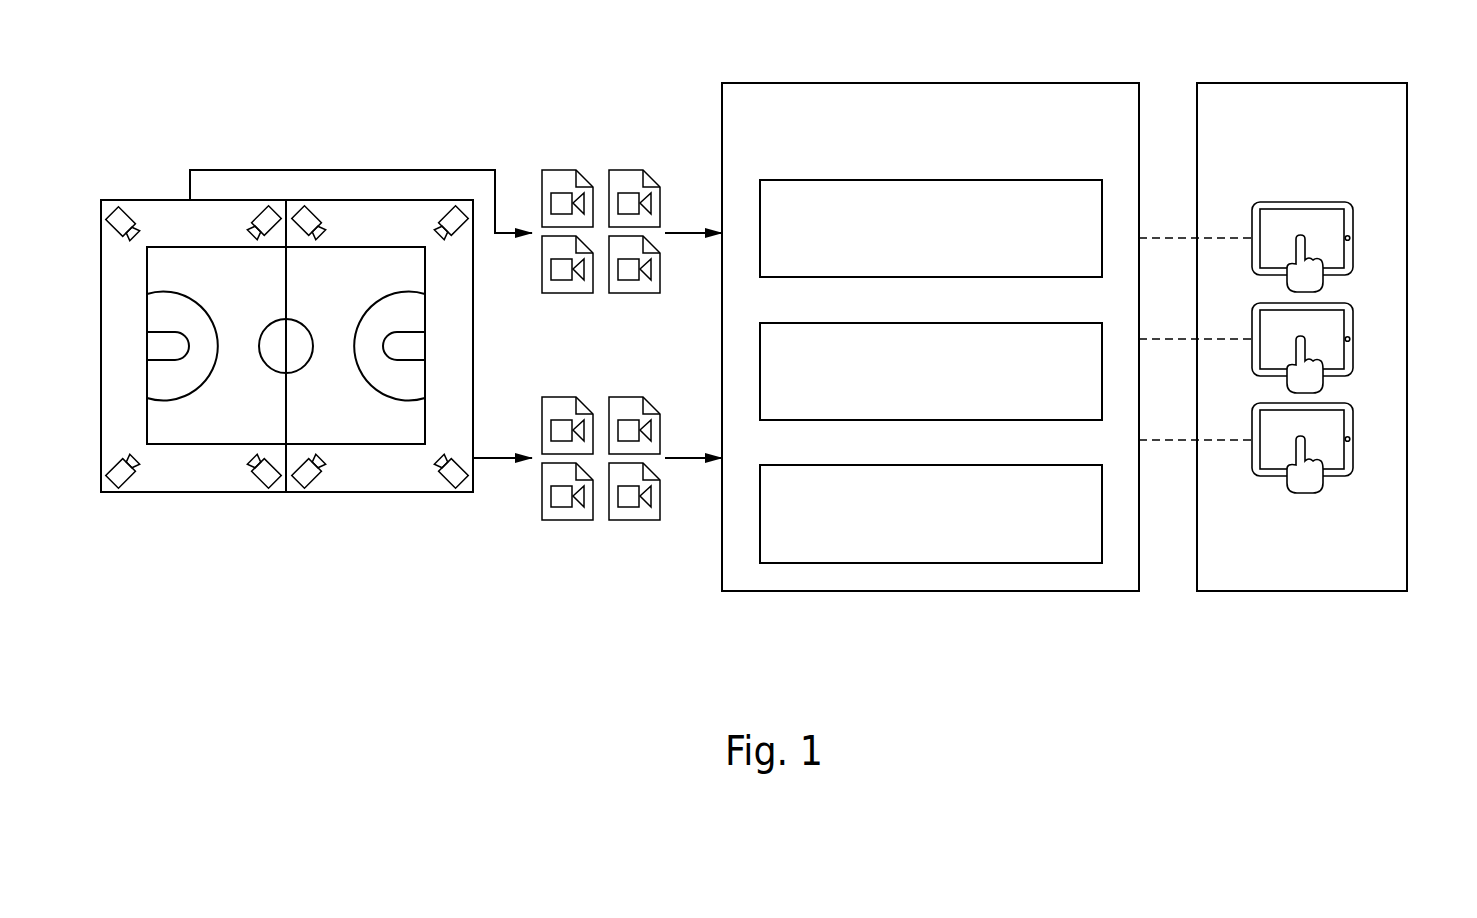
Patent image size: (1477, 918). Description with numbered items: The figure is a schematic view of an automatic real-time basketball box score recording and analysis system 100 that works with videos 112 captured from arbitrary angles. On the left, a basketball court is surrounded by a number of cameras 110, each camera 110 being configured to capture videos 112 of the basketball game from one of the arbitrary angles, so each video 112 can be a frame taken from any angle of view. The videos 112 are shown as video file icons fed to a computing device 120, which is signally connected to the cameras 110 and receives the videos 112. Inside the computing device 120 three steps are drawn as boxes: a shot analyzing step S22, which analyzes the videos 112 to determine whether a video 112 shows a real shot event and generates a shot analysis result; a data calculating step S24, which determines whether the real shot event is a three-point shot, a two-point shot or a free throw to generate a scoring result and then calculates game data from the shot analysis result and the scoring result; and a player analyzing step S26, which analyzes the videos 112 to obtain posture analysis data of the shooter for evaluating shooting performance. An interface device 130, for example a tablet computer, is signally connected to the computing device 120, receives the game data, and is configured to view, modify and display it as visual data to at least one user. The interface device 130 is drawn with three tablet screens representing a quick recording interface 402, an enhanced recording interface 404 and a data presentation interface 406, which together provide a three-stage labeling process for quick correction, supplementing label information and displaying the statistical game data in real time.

The automatic real-time basketball box score recording and analysis system 100 is at (187, 86).
The camera 110 is at (140, 207).
The videos 112 is at (572, 170).
The computing device 120 is at (752, 83).
The shot analyzing step S22 is at (790, 180).
The data calculating step S24 is at (790, 323).
The player analyzing step S26 is at (790, 465).
The interface device 130 is at (1302, 83).
The quick recording interface 402 is at (1327, 225).
The enhanced recording interface 404 is at (1327, 327).
The data presentation interface 406 is at (1327, 427).